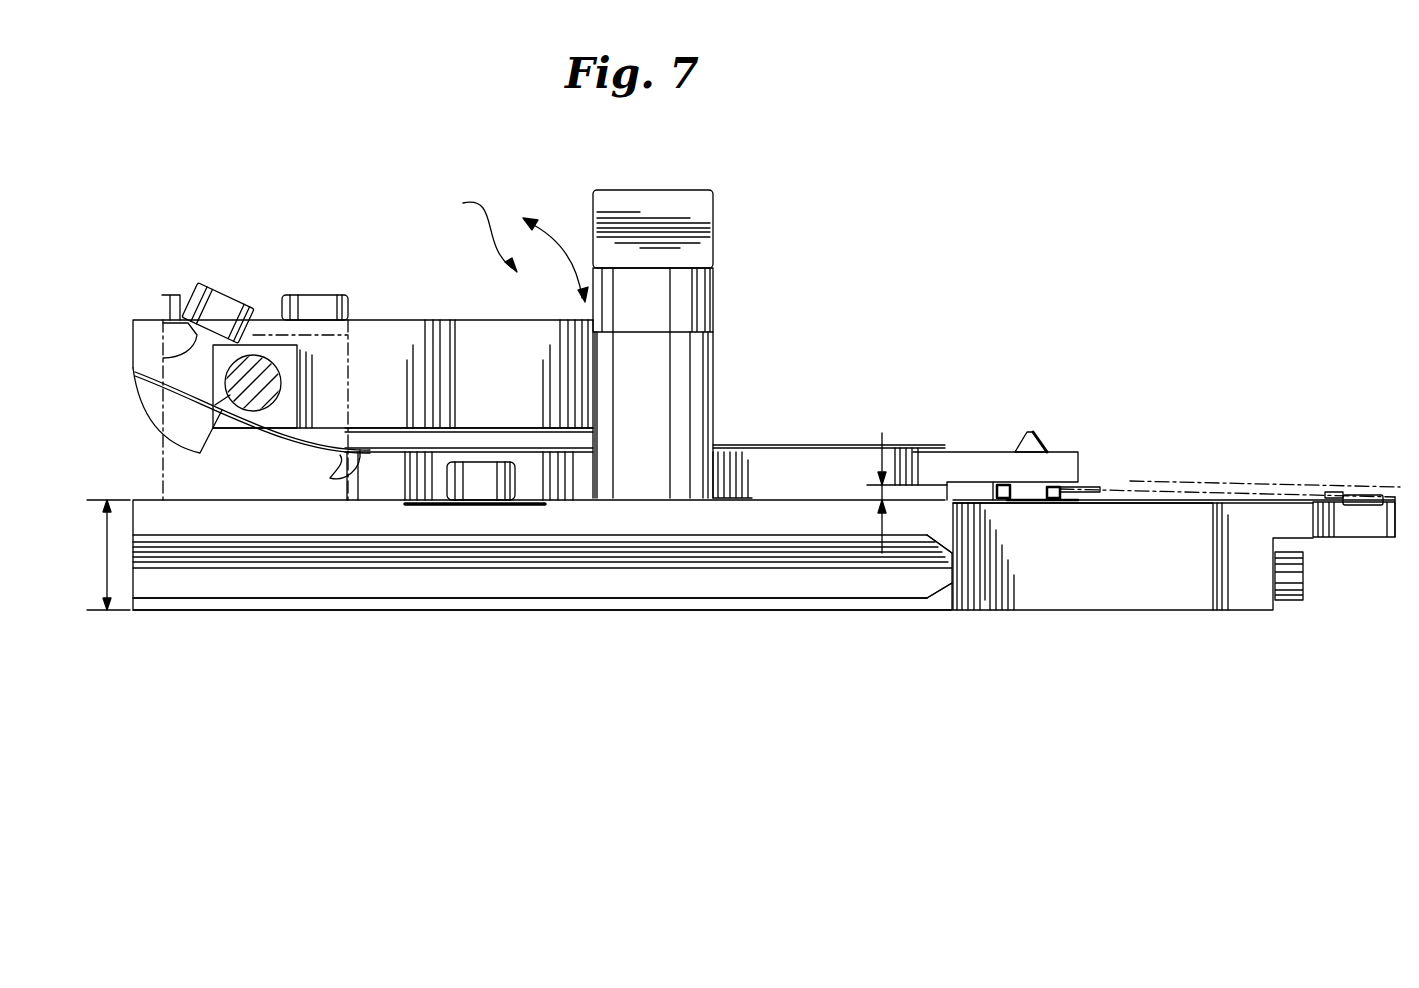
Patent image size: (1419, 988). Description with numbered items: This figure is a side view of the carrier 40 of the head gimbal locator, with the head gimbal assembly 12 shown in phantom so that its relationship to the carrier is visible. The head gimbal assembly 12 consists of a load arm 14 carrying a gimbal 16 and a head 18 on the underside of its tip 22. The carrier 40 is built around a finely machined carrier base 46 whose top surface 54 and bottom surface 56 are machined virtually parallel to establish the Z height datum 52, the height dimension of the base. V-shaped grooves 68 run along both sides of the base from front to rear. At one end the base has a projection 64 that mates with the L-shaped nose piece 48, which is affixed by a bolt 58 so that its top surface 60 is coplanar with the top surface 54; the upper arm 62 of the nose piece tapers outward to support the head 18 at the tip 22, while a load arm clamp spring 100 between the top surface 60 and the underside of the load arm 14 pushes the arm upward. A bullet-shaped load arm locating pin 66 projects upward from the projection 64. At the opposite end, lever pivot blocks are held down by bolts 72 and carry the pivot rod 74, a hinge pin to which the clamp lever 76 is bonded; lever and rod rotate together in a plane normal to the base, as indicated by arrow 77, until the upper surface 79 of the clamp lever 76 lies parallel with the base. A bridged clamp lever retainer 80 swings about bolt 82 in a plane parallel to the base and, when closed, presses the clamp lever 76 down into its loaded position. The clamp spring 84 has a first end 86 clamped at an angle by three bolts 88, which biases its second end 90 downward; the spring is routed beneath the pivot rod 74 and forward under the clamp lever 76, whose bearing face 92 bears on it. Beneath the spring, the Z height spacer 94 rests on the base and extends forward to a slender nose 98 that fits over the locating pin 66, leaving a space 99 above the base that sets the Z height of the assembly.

The head gimbal assembly 12 is at (1215, 480).
The load arm 14 is at (1262, 487).
The gimbal 16 is at (1393, 495).
The head 18 is at (1365, 505).
The tip 22 is at (1392, 485).
The carrier 40 is at (473, 232).
The carrier base 46 is at (765, 520).
The nose piece 48 is at (1258, 590).
The Z height datum 52 is at (108, 555).
The top surface 54 is at (562, 495).
The bottom surface 56 is at (700, 612).
The bolt 58 is at (1300, 580).
The top surface 60 is at (1095, 495).
The upper arm 62 is at (1350, 525).
The projection 64 is at (1118, 590).
The load arm locating pin 66 is at (1030, 432).
The V-shaped grooves 68 is at (905, 585).
The bolts 72 is at (478, 490).
The pivot rod 74 is at (290, 425).
The clamp lever 76 is at (508, 330).
The arrow 77 is at (560, 240).
The upper surface 79 is at (435, 330).
The clamp lever retainer 80 is at (665, 195).
The bolt 82 is at (680, 270).
The clamp spring 84 is at (355, 465).
The first end 86 is at (135, 375).
The bolts 88 is at (230, 290).
The second end 90 is at (920, 450).
The bearing face 92 is at (230, 405).
The Z height spacer 94 is at (770, 465).
The nose 98 is at (1080, 460).
The space 99 is at (880, 470).
The load arm clamp spring 100 is at (1000, 480).